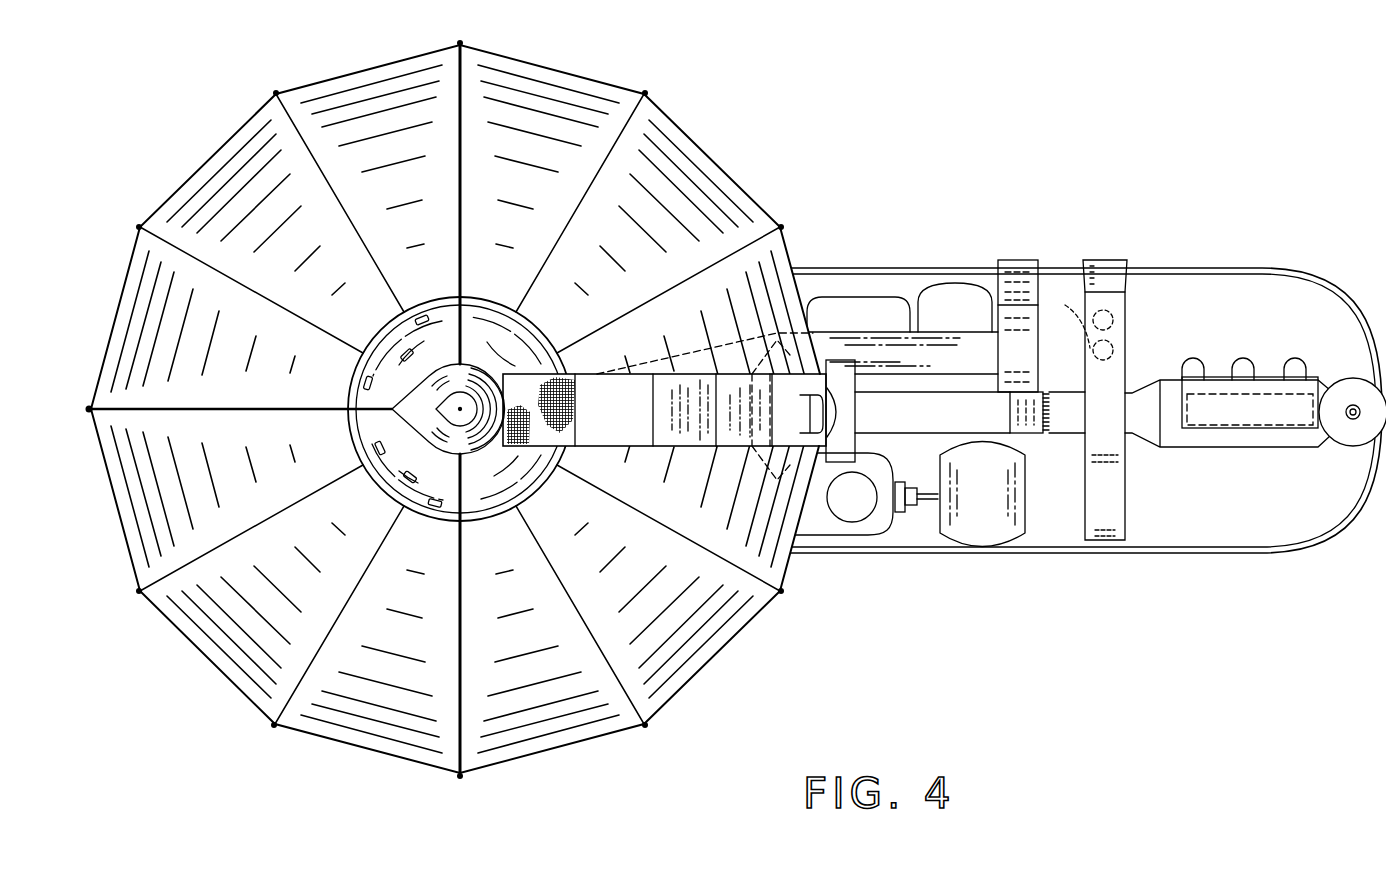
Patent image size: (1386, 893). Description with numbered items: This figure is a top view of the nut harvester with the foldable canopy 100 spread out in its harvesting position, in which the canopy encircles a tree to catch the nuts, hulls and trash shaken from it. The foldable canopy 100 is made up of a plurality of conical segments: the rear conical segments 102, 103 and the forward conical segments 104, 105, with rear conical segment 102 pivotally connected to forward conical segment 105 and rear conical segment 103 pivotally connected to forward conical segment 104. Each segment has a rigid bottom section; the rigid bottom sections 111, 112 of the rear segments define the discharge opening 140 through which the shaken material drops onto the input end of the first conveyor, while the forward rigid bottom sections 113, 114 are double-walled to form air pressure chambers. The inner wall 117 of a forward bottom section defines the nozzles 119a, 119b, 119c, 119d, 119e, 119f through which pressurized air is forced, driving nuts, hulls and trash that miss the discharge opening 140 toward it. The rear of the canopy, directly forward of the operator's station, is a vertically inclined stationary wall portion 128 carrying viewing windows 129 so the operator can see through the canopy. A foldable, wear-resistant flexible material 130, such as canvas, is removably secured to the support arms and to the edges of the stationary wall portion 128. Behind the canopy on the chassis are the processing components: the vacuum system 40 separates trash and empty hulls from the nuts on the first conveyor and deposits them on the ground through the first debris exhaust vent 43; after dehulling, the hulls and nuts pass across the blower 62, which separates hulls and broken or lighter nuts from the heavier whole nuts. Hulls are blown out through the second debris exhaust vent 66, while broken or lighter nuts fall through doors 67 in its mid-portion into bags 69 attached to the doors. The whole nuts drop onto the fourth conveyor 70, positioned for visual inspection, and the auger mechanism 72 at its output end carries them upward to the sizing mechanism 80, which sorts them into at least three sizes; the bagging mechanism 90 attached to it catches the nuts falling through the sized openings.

The foldable canopy 100 is at (548, 766).
The rear conical segment 102 is at (726, 660).
The rear conical segment 103 is at (740, 166).
The forward conical segment 104 is at (196, 168).
The forward conical segment 105 is at (196, 688).
The flexible material 130 is at (555, 110).
The rigid bottom section 111 is at (487, 498).
The rigid bottom section 112 is at (535, 333).
The forward rigid bottom section 113 is at (392, 330).
The forward rigid bottom section 114 is at (366, 422).
The inner wall 117 is at (366, 396).
The nozzle 119a is at (433, 506).
The nozzle 119b is at (405, 479).
The nozzle 119c is at (378, 449).
The nozzle 119d is at (366, 384).
The nozzle 119e is at (404, 352).
The nozzle 119f is at (420, 316).
The stationary wall portion 128 is at (693, 373).
The viewing windows 129 is at (770, 420).
The discharge opening 140 is at (547, 427).
The vacuum system 40 is at (985, 365).
The first debris exhaust vent 43 is at (1018, 260).
The blower 62 is at (1118, 505).
The second debris exhaust vent 66 is at (1118, 417).
The doors 67 is at (1075, 340).
The bags 69 is at (1116, 356).
The fourth conveyor 70 is at (1200, 450).
The auger mechanism 72 is at (1358, 436).
The sizing mechanism 80 is at (1257, 426).
The bagging mechanism 90 is at (1280, 356).